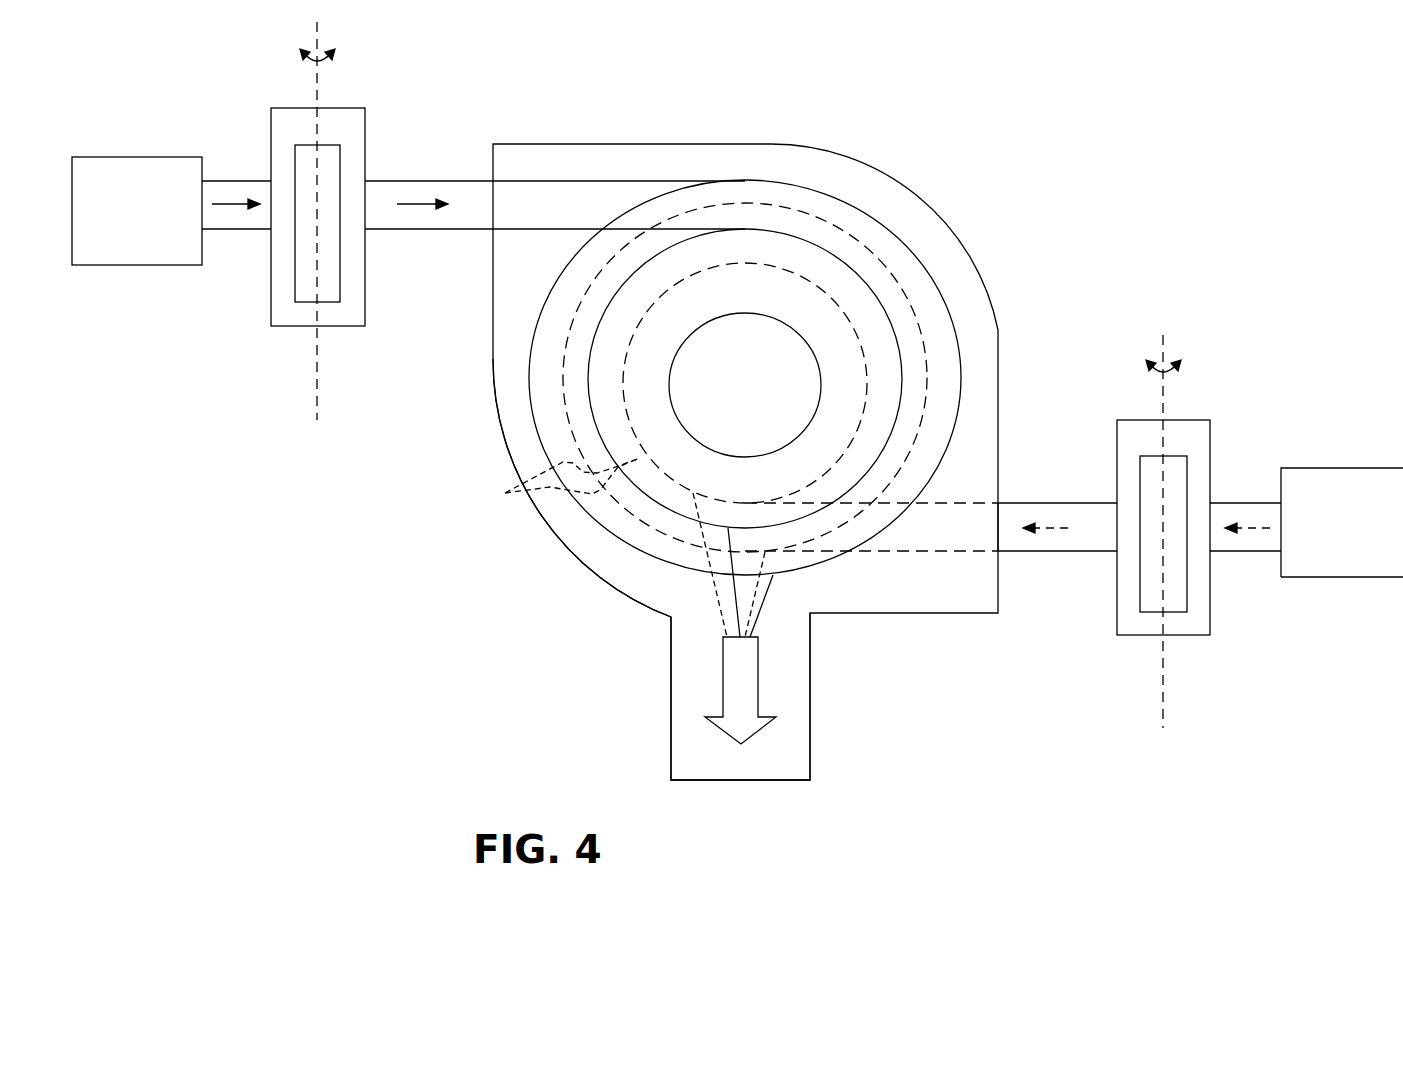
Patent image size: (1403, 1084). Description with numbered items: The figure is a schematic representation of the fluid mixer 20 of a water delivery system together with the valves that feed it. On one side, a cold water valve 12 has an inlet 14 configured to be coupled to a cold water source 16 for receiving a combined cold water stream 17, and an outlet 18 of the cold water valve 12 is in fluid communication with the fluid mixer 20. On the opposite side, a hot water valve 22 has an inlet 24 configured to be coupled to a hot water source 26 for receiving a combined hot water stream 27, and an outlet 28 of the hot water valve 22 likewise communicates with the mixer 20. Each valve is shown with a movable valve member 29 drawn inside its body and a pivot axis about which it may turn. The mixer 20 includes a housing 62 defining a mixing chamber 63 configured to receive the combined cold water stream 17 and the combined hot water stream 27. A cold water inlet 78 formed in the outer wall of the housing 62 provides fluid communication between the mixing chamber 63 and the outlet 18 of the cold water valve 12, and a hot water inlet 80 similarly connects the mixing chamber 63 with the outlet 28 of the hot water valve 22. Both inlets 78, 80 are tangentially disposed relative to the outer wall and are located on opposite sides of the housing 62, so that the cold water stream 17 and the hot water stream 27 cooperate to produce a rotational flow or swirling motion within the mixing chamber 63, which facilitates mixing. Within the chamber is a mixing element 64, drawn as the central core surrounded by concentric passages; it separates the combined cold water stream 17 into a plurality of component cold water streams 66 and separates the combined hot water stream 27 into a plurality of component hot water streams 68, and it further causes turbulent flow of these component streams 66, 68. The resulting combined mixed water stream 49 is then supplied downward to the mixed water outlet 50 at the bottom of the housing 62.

The cold water valve 12 is at (1202, 638).
The inlet 14 is at (1247, 553).
The cold water source 16 is at (1330, 578).
The combined cold water stream 17 is at (1048, 528).
The outlet 18 is at (1093, 553).
The fluid mixer 20 is at (752, 136).
The hot water valve 22 is at (344, 327).
The inlet 24 is at (227, 231).
The hot water source 26 is at (143, 266).
The combined hot water stream 27 is at (228, 188).
The outlet 28 is at (388, 231).
The valve member 29 is at (300, 303).
The combined mixed water stream 49 is at (757, 685).
The mixed water outlet 50 is at (670, 718).
The housing 62 is at (630, 603).
The mixing chamber 63 is at (568, 532).
The mixing element 64 is at (757, 313).
The component cold water streams 66 is at (667, 385).
The component hot water streams 68 is at (847, 263).
The cold water inlet 78 is at (1000, 553).
The hot water inlet 80 is at (492, 232).